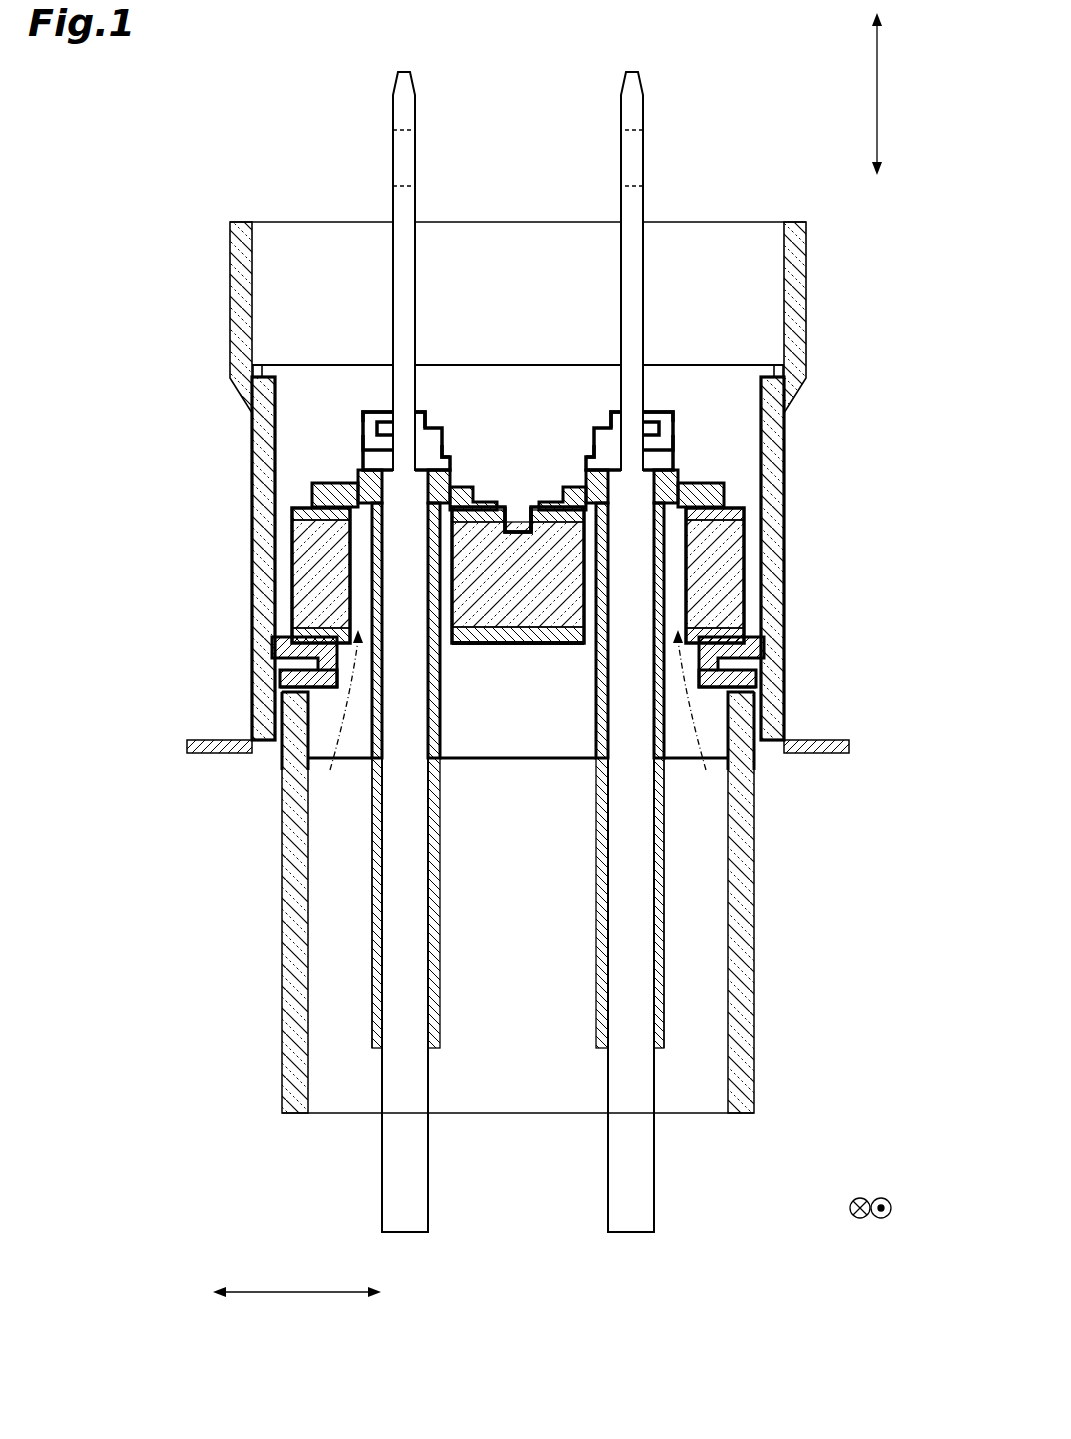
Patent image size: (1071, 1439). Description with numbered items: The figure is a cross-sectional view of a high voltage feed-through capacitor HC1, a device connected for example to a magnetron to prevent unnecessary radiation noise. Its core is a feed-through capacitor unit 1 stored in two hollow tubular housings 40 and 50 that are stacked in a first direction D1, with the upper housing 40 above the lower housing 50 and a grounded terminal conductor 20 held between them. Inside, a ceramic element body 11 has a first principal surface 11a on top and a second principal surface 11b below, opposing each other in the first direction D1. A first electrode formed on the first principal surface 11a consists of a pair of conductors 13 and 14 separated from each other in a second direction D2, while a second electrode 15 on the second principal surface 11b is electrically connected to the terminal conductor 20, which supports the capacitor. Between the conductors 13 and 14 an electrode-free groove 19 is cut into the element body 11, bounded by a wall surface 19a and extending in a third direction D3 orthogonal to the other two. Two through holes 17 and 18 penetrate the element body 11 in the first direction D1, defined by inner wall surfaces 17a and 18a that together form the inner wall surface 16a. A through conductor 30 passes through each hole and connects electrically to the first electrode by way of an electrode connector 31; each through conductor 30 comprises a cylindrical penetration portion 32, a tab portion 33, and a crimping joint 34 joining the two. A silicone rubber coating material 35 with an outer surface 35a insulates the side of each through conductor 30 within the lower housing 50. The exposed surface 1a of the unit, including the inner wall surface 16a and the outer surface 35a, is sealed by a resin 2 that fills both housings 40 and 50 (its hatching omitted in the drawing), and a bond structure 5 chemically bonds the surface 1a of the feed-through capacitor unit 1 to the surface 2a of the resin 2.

The feed-through capacitor unit 1 is at (808, 702).
The surface 1a is at (330, 680).
The resin 2 is at (458, 480).
The surface of the resin 2a is at (750, 683).
The bond structure 5 is at (385, 375).
The element body 11 is at (507, 666).
The first principal surface 11a is at (552, 540).
The second principal surface 11b is at (528, 630).
The conductor 13 is at (340, 515).
The conductor 14 is at (690, 513).
The second electrode 15 is at (335, 640).
The inner wall surface 16a is at (590, 1253).
The through hole 17 is at (319, 486).
The inner wall surface 17a is at (310, 578).
The through hole 18 is at (724, 486).
The inner wall surface 18a is at (722, 582).
The groove 19 is at (517, 528).
The wall surface 19a is at (556, 530).
The terminal conductor 20 is at (190, 738).
The through conductor 30 is at (507, 440).
The electrode connector 31 is at (350, 495).
The penetration portion 32 is at (375, 482).
The tab portion 33 is at (385, 400).
The crimping joint 34 is at (370, 440).
The coating material 35 is at (522, 833).
The outer surface 35a is at (375, 940).
The housing 40 is at (808, 243).
The housing 50 is at (748, 1057).
The high voltage feed-through capacitor HC1 is at (250, 84).
The first direction D1 is at (880, 93).
The second direction D2 is at (298, 1296).
The third direction D3 is at (880, 1218).